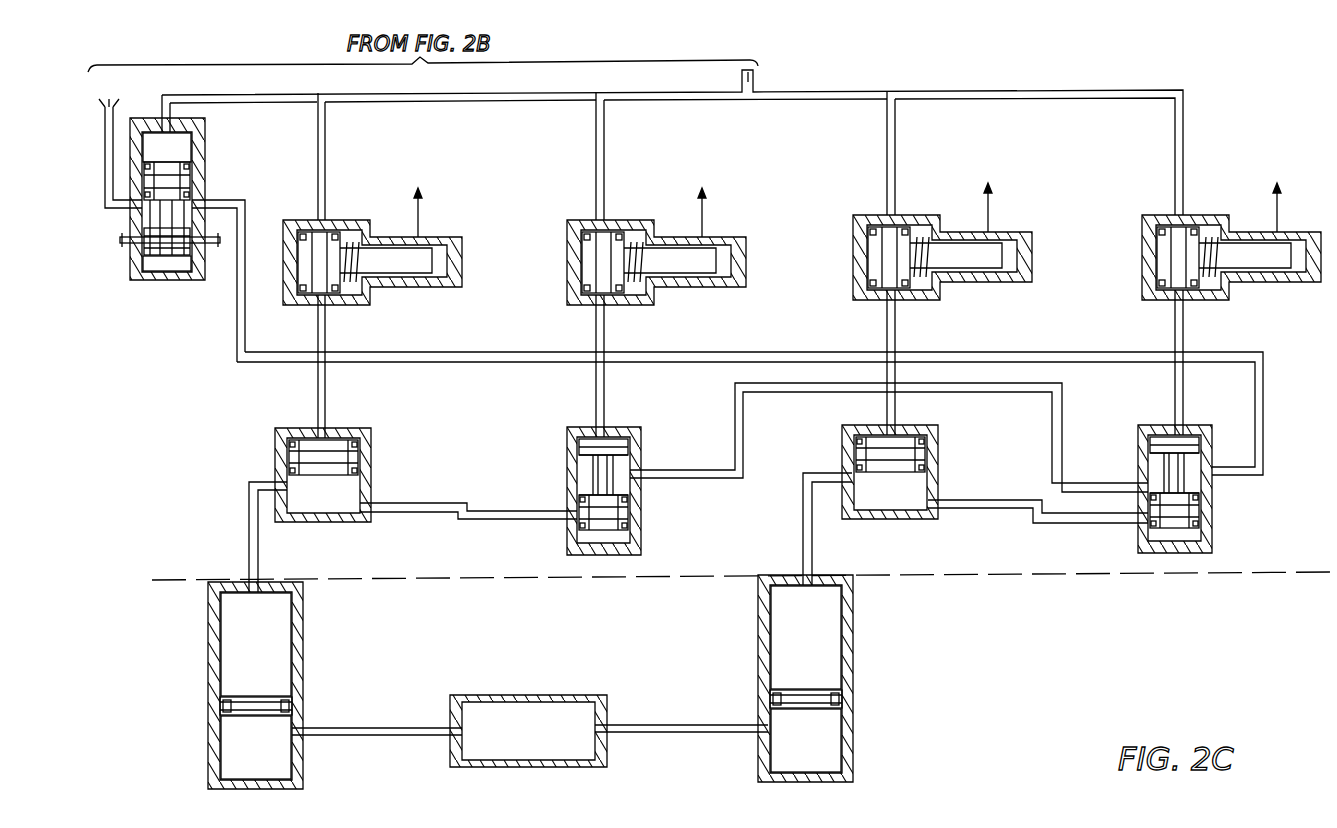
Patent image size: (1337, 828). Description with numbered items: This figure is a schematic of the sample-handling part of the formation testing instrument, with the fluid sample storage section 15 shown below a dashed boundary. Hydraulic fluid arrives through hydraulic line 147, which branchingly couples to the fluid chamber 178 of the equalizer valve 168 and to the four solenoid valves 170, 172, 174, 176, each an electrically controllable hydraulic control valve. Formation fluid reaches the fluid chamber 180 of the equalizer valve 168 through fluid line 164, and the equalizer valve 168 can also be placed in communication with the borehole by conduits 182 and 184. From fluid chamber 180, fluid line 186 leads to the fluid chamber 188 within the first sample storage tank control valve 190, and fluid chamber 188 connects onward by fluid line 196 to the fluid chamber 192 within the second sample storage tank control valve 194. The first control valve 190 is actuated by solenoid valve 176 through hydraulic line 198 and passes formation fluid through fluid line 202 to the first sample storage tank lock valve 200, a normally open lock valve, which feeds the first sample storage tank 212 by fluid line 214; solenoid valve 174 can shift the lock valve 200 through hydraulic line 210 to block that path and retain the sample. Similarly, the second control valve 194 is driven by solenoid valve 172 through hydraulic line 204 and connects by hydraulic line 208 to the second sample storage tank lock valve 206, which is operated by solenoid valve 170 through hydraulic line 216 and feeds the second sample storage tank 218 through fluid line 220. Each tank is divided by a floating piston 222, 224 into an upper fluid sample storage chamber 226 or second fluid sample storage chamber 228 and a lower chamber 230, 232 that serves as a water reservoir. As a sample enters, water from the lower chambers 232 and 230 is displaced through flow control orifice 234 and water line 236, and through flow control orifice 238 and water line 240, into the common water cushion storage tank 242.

The fluid sample storage section 15 is at (1238, 637).
The hydraulic line 147 is at (757, 78).
The fluid line 164 is at (117, 112).
The equalizer valve 168 is at (205, 178).
The solenoid valve 170 is at (450, 237).
The solenoid valve 172 is at (737, 237).
The solenoid valve 174 is at (1022, 233).
The solenoid valve 176 is at (1306, 233).
The fluid chamber 178 is at (186, 147).
The fluid chamber 180 is at (168, 263).
The conduit 182 is at (121, 244).
The conduit 184 is at (212, 252).
The fluid line 186 is at (477, 364).
The fluid chamber 188 is at (1195, 478).
The first sample storage tank control valve 190 is at (1213, 548).
The fluid chamber 192 is at (622, 466).
The second sample storage tank control valve 194 is at (641, 548).
The fluid line 196 is at (797, 393).
The hydraulic line 198 is at (1185, 330).
The first sample storage tank lock valve 200 is at (906, 518).
The fluid line 202 is at (1077, 525).
The hydraulic line 204 is at (606, 332).
The second sample storage tank lock valve 206 is at (358, 429).
The hydraulic line 208 is at (445, 520).
The hydraulic line 210 is at (897, 330).
The first sample storage tank 212 is at (857, 625).
The fluid line 214 is at (803, 532).
The hydraulic line 216 is at (318, 399).
The second sample storage tank 218 is at (303, 617).
The fluid line 220 is at (249, 540).
The floating piston 222 is at (857, 683).
The floating piston 224 is at (220, 698).
The fluid sample storage chamber 226 is at (846, 652).
The second fluid sample storage chamber 228 is at (283, 655).
The lower chamber 230 is at (857, 750).
The lower chamber 232 is at (257, 772).
The flow control orifice 234 is at (302, 727).
The water line 236 is at (390, 737).
The flow control orifice 238 is at (756, 730).
The water line 240 is at (682, 735).
The water cushion storage tank 242 is at (531, 695).